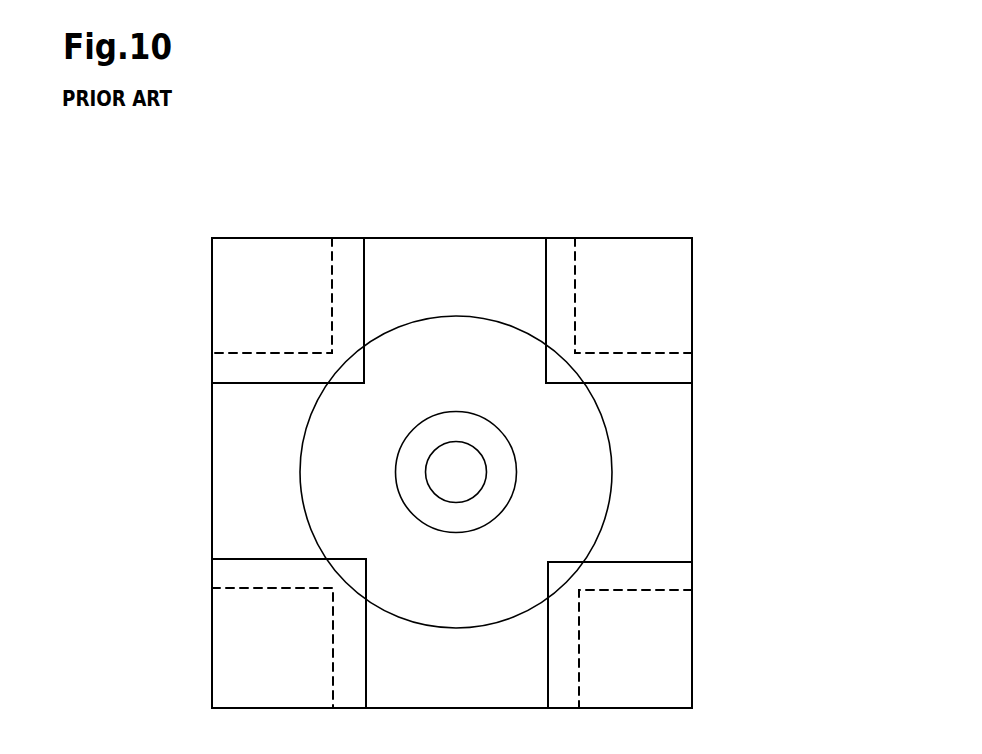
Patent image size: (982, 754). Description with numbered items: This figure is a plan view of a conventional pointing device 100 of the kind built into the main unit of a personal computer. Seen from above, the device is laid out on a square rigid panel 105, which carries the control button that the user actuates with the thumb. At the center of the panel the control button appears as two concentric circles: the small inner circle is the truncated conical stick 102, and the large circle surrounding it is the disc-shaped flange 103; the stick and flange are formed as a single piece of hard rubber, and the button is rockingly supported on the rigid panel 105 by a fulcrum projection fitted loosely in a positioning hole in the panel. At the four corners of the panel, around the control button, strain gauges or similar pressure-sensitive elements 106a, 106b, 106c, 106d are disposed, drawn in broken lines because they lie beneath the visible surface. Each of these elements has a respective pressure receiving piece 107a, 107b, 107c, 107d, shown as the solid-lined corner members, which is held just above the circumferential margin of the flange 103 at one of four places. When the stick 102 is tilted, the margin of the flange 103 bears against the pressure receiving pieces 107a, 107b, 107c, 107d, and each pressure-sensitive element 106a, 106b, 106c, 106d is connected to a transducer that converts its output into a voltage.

The pointing device 100 is at (739, 220).
The truncated conical stick 102 is at (503, 470).
The disc-shaped flange 103 is at (449, 362).
The rigid panel 105 is at (237, 457).
The pressure-sensitive element 106a is at (665, 305).
The pressure-sensitive element 106b is at (680, 657).
The pressure-sensitive element 106c is at (226, 297).
The pressure-sensitive element 106d is at (228, 660).
The pressure receiving piece 107a is at (667, 369).
The pressure receiving piece 107b is at (682, 575).
The pressure receiving piece 107c is at (235, 368).
The pressure receiving piece 107d is at (242, 575).